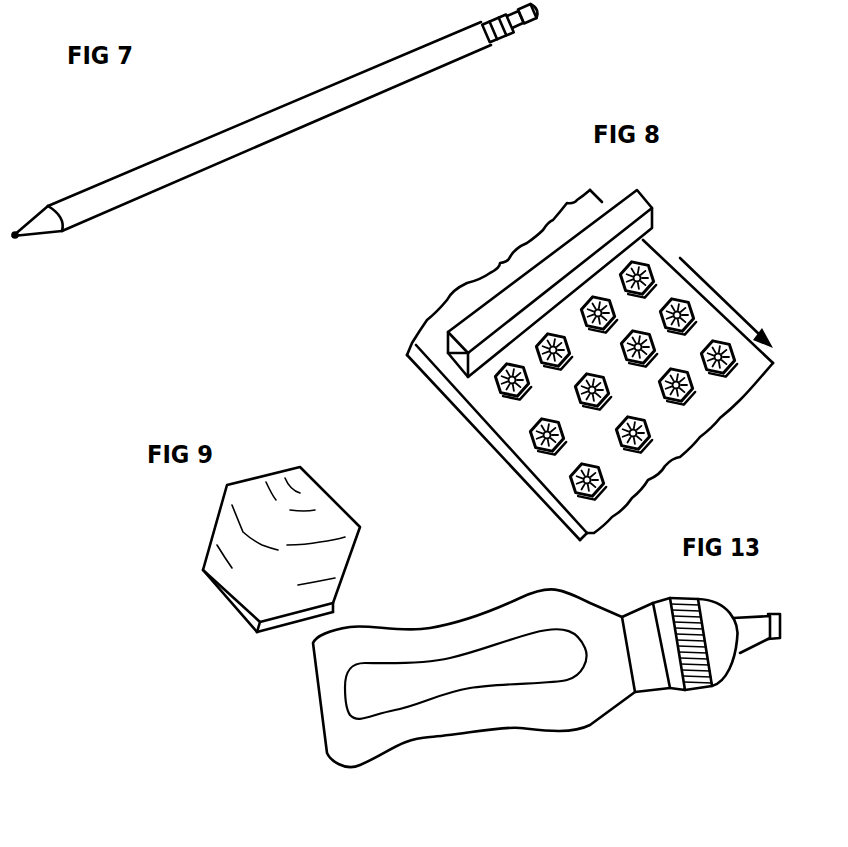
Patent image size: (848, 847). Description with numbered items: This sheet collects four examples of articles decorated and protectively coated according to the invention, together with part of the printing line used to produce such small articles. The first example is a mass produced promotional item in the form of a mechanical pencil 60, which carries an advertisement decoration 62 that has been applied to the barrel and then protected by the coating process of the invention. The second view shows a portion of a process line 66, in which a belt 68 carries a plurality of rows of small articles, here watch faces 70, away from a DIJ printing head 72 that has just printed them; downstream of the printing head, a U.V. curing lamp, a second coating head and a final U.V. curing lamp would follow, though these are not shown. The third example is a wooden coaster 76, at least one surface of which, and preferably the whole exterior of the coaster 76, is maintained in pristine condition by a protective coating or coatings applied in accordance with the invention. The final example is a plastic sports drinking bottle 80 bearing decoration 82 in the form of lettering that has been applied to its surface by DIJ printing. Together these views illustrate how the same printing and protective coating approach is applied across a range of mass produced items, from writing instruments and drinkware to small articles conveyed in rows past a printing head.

In FIG. 7, the mechanical pencil 60 is at (124, 134).
In FIG. 7, the advertisement decoration 62 is at (240, 124).
In FIG. 8, the process line 66 is at (446, 241).
In FIG. 8, the belt 68 is at (707, 330).
In FIG. 8, the watch faces 70 is at (655, 259).
In FIG. 8, the DIJ printing head 72 is at (627, 217).
In FIG. 9, the wooden coaster 76 is at (164, 516).
In FIG. 13, the plastic sports drinking bottle 80 is at (432, 590).
In FIG. 13, the decoration 82 is at (500, 643).